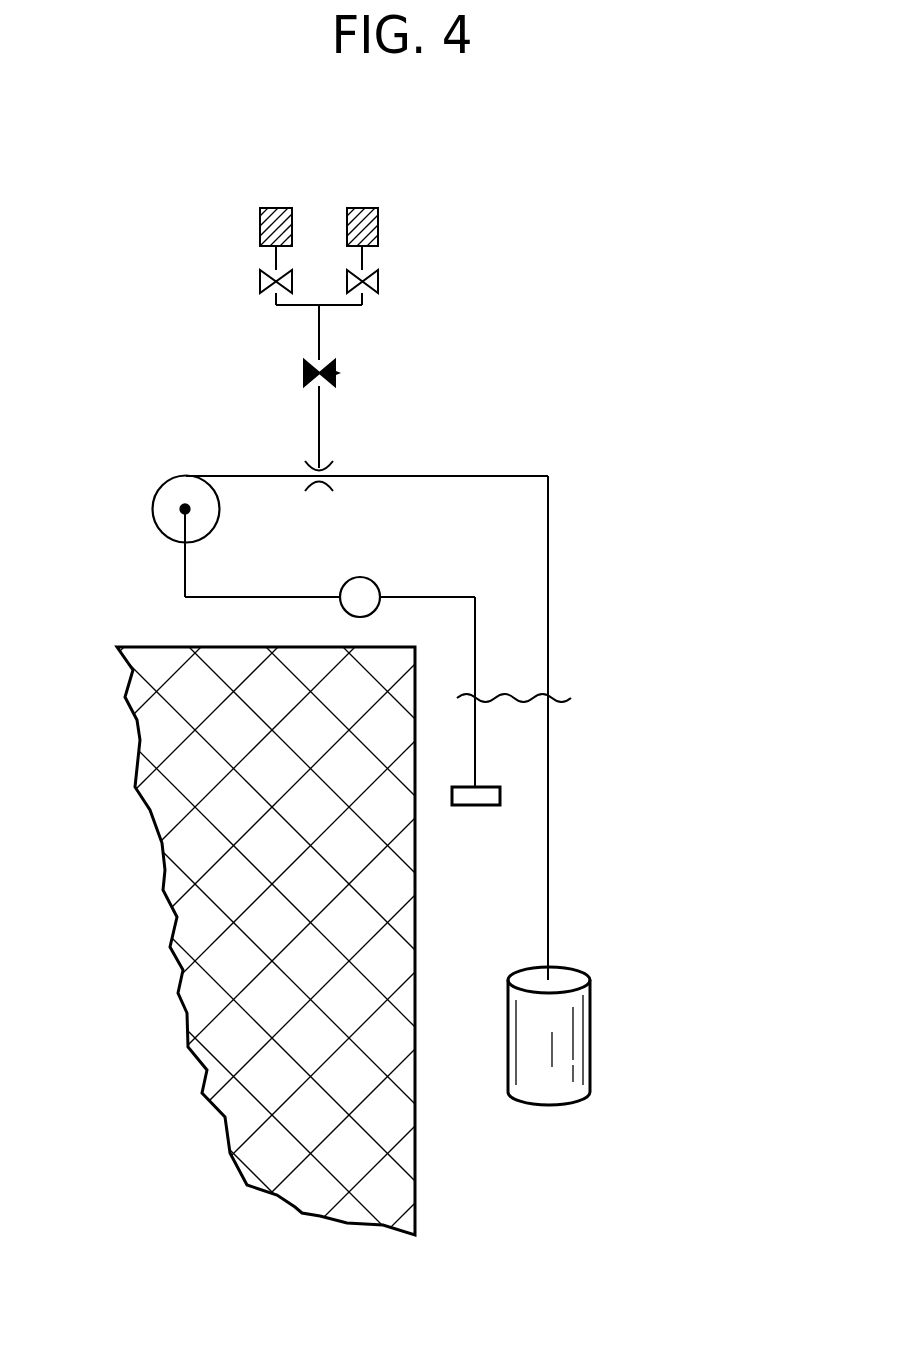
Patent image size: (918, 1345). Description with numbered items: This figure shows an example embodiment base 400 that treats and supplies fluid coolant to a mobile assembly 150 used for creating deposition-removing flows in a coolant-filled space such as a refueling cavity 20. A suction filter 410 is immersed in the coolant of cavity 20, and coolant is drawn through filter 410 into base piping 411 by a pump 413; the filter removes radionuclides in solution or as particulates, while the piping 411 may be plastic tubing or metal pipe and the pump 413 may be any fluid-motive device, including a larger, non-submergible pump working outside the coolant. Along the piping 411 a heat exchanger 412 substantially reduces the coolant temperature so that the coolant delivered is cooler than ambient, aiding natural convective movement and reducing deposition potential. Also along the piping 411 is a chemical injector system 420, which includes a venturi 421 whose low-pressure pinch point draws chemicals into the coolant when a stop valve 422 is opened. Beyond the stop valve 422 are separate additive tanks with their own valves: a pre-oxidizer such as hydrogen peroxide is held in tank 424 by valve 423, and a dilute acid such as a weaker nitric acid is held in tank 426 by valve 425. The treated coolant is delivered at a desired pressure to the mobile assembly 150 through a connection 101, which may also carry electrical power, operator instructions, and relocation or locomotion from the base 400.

The base 400 is at (555, 282).
The chemical injector system 420 is at (208, 385).
The venturi 421 is at (361, 457).
The stop valve 422 is at (355, 375).
The valve 423 is at (258, 282).
The tank 424 is at (279, 195).
The valve 425 is at (381, 283).
The tank 426 is at (364, 195).
The pump 413 is at (148, 509).
The heat exchanger 412 is at (339, 610).
The base piping 411 is at (447, 723).
The suction filter 410 is at (465, 810).
The connection 101 is at (612, 618).
The mobile assembly 150 is at (574, 1014).
The refueling cavity 20 is at (482, 1182).